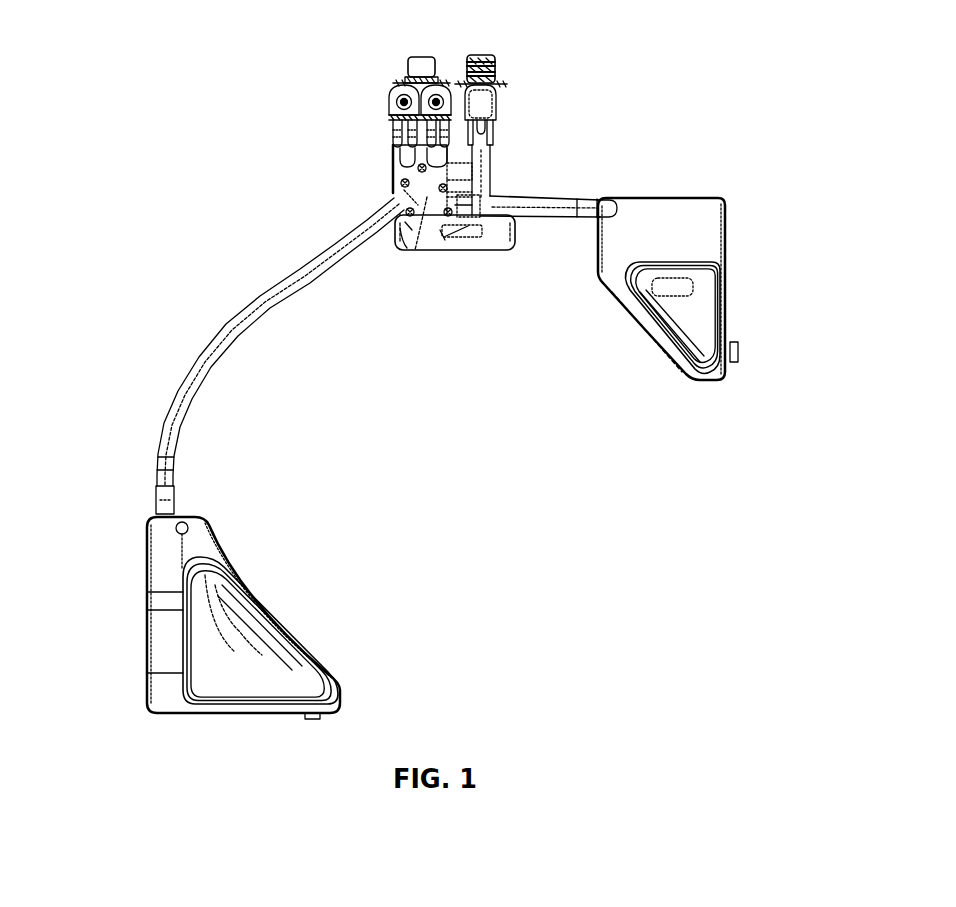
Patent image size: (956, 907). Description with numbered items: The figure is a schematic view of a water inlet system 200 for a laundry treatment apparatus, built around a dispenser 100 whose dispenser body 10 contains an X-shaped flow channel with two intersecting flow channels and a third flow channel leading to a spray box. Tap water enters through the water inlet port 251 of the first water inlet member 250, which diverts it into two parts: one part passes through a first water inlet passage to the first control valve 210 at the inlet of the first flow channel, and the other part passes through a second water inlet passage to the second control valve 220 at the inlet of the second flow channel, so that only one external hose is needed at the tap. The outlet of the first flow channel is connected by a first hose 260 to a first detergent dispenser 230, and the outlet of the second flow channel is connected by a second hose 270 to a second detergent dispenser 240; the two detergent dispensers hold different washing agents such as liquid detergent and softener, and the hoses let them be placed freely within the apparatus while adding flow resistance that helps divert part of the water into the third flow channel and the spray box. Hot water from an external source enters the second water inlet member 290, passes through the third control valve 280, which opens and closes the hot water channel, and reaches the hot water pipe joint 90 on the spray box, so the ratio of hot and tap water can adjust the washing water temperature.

The water inlet system 200 is at (205, 132).
The dispenser 100 is at (438, 255).
The dispenser body 10 is at (413, 251).
The hot water pipe joint 90 is at (470, 252).
The second control valve 220 is at (391, 108).
The first water inlet member 250 is at (406, 82).
The water inlet port 251 is at (422, 55).
The second water inlet member 290 is at (497, 74).
The third control valve 280 is at (498, 101).
The first control valve 210 is at (494, 118).
The second hose 270 is at (550, 207).
The second detergent dispenser 240 is at (703, 242).
The first hose 260 is at (250, 305).
The first detergent dispenser 230 is at (167, 577).